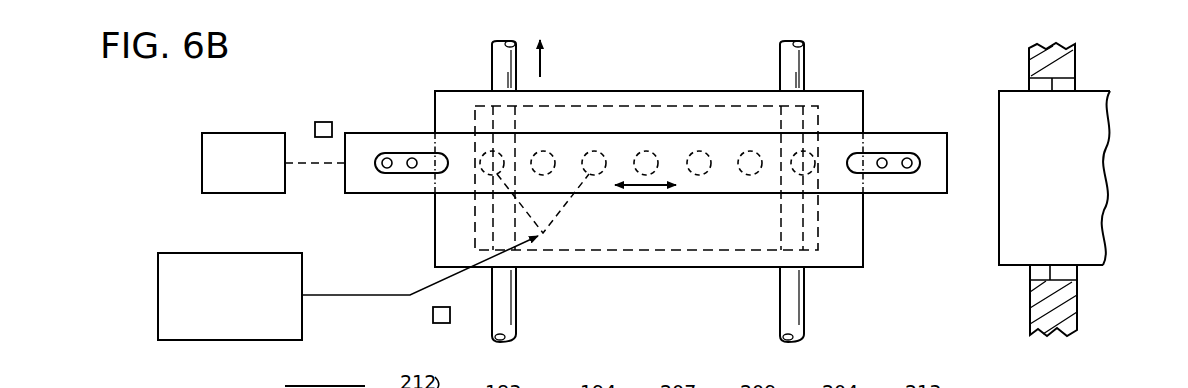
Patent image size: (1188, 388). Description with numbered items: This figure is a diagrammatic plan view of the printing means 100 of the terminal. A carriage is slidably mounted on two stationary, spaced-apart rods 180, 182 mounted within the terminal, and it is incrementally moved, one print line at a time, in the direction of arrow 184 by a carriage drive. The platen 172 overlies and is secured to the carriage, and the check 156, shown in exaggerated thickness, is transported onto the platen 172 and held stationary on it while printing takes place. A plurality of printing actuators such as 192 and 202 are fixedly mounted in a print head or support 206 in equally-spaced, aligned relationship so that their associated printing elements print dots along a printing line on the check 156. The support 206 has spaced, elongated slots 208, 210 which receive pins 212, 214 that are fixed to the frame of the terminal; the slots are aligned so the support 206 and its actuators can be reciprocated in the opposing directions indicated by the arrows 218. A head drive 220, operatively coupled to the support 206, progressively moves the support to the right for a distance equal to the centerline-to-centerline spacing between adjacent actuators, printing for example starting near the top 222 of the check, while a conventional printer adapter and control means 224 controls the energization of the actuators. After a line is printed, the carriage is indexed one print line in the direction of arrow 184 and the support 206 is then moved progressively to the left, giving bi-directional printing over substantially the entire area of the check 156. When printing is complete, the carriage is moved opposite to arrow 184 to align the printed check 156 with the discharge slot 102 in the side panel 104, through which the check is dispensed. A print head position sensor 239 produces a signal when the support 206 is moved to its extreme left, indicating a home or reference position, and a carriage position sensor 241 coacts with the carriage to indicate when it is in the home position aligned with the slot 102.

The printing means 100 is at (721, 181).
The discharge slot 102 is at (1077, 268).
The side panel 104 is at (1076, 63).
The check 156 is at (865, 246).
The platen 172 is at (684, 104).
The rod 180 is at (492, 65).
The rod 182 is at (804, 62).
The arrow 184 is at (540, 62).
The printing actuator 192 is at (483, 172).
The printing actuator 202 is at (745, 178).
The print head or support 206 is at (340, 198).
The elongated slot 208 is at (388, 157).
The elongated slot 210 is at (907, 157).
The pin 212 is at (411, 170).
The pin 214 is at (884, 170).
The arrows 218 is at (644, 189).
The head drive 220 is at (243, 133).
The top of the check 222 is at (618, 98).
The printer adapter and control means 224 is at (192, 253).
The print head position sensor 239 is at (318, 121).
The carriage position sensor 241 is at (433, 315).